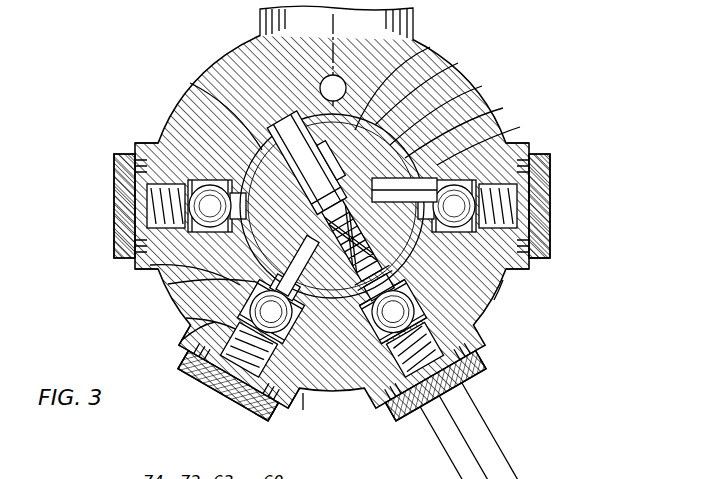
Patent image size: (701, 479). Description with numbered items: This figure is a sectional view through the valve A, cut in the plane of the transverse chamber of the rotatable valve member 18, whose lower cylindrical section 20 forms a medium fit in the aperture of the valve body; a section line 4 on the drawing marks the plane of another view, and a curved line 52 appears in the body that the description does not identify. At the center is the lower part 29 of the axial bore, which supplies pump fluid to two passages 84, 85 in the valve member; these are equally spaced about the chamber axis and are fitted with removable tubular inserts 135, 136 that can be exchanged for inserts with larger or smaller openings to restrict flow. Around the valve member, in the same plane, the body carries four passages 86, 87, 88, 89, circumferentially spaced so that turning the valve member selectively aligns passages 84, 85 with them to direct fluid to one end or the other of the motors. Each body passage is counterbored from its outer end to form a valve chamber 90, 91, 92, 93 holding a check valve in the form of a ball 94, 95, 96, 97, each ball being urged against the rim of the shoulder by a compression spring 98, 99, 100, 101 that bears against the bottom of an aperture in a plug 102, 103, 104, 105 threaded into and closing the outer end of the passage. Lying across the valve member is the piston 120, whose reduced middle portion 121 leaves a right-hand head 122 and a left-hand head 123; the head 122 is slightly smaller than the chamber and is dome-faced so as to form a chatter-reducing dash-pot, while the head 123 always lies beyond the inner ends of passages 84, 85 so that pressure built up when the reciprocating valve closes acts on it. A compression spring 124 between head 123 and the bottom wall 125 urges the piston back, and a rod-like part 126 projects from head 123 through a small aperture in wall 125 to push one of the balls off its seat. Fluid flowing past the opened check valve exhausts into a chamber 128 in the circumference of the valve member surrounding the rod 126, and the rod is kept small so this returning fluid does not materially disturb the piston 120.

The valve A is at (208, 62).
The section line 4 is at (333, 14).
The valve member 18 is at (456, 64).
The lower cylindrical section 20 is at (185, 110).
The lower part of bore 29 is at (297, 263).
The fluid passage 52 is at (428, 47).
The passage 84 is at (292, 208).
The passage 85 is at (481, 87).
The passage 86 is at (168, 284).
The passage 87 is at (186, 318).
The passage 88 is at (405, 283).
The passage 89 is at (501, 110).
The valve chamber 90 is at (166, 136).
The valve chamber 91 is at (182, 340).
The valve chamber 92 is at (387, 337).
The valve chamber 93 is at (515, 130).
The ball 94 is at (140, 268).
The ball 95 is at (241, 383).
The ball 96 is at (418, 310).
The ball 97 is at (502, 291).
The compression spring 98 is at (162, 206).
The compression spring 99 is at (206, 380).
The compression spring 100 is at (468, 405).
The compression spring 101 is at (551, 155).
The plug 102 is at (117, 216).
The plug 103 is at (244, 404).
The plug 104 is at (470, 385).
The plug 105 is at (540, 268).
The piston 120 is at (262, 34).
The reduced middle portion 121 is at (292, 190).
The right-hand piston head 122 is at (208, 95).
The left-hand piston head 123 is at (380, 172).
The compression spring 124 is at (345, 262).
The wall 125 is at (306, 396).
The rod-like part 126 is at (411, 271).
The chamber 128 is at (372, 322).
The tubular insert 135 is at (296, 227).
The tubular insert 136 is at (414, 256).